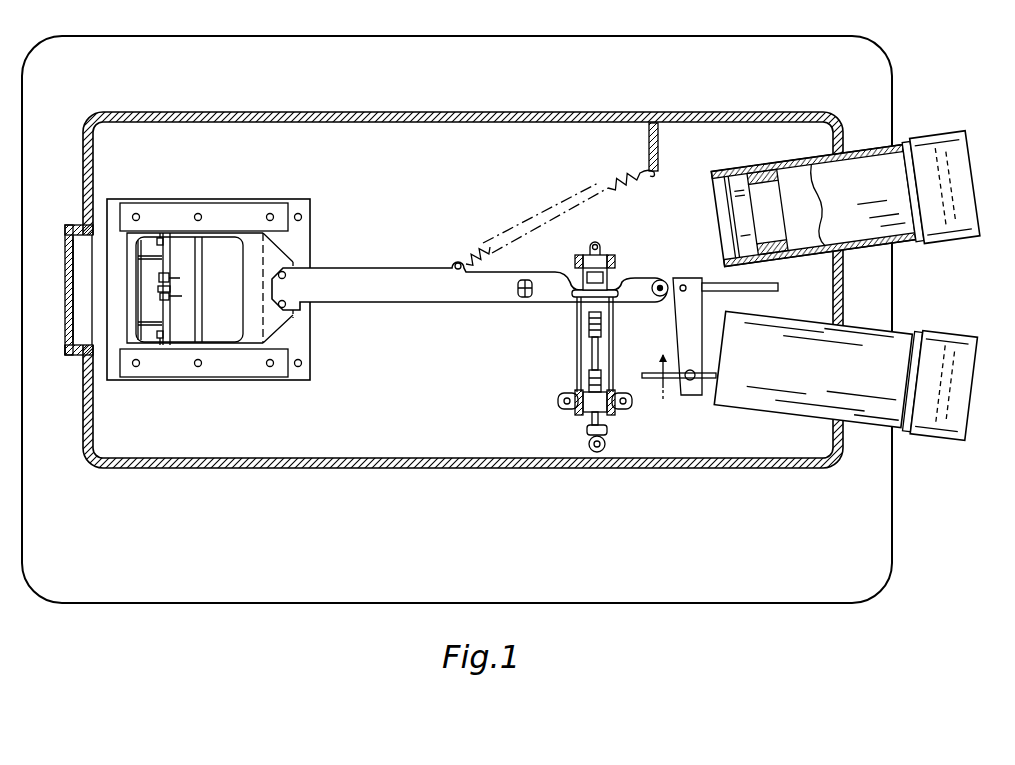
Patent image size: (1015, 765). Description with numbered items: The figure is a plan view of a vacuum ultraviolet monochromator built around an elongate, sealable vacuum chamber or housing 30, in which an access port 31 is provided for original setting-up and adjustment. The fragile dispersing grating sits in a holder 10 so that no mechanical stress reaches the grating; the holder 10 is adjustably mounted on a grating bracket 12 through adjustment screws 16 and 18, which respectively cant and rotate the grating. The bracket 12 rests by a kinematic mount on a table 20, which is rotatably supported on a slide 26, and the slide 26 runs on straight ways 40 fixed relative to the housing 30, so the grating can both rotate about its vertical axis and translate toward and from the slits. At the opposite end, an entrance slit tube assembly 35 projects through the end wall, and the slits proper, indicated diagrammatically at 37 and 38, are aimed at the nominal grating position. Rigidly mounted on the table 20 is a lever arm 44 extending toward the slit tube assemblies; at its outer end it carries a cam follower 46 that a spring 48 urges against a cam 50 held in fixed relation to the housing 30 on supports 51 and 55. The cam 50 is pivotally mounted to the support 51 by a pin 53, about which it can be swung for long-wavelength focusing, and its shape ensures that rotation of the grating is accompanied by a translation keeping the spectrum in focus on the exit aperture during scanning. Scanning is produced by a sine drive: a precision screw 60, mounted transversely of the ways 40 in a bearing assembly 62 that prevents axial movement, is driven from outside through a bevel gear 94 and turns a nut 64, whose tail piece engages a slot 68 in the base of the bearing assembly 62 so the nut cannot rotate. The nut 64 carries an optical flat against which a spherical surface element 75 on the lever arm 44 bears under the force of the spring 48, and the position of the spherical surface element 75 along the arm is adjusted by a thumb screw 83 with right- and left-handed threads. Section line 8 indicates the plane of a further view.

The vacuum chamber or housing 30 is at (382, 92).
The entrance slit tube assembly 35 is at (858, 150).
The slit 37 is at (960, 183).
The slit 38 is at (962, 390).
The spring 48 is at (609, 175).
The adjustment screw 16 is at (160, 243).
The holder 10 is at (184, 250).
The straight ways 40 is at (278, 222).
The table 20 is at (127, 265).
The slide 26 is at (127, 304).
The access port 31 is at (66, 343).
The adjustment screw 18 is at (168, 272).
The grating bracket 12 is at (160, 318).
The lever arm 44 is at (440, 310).
The thumb screw 83 is at (522, 299).
The precision screw 60 is at (586, 327).
The slot 68 is at (594, 357).
The bearing assembly 62 is at (568, 423).
The bevel gear 94 is at (612, 440).
The nut 64 is at (615, 312).
The spherical surface element 75 is at (618, 287).
The cam follower 46 is at (667, 275).
The pin 53 is at (684, 286).
The support 51 is at (770, 292).
The cam 50 is at (677, 338).
The support 55 is at (708, 392).
The section line 8 is at (694, 384).